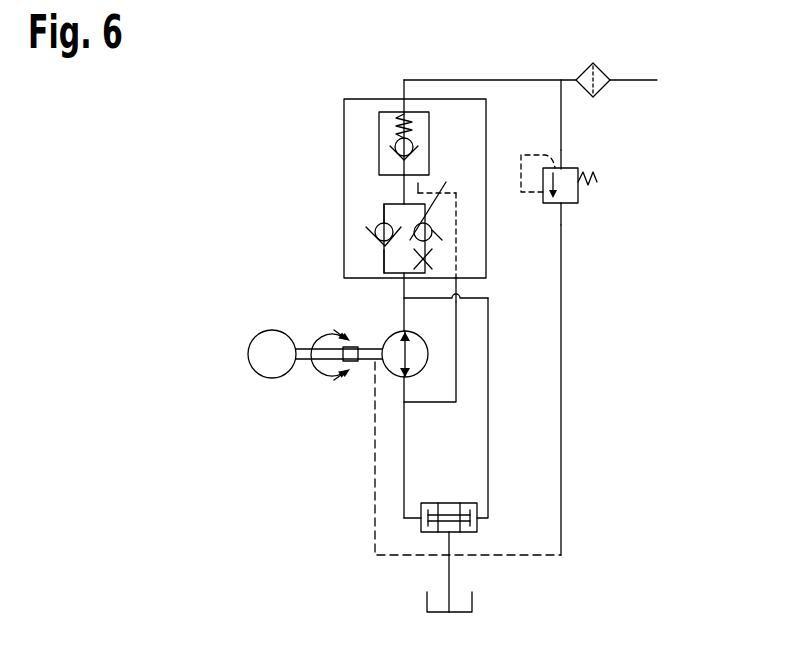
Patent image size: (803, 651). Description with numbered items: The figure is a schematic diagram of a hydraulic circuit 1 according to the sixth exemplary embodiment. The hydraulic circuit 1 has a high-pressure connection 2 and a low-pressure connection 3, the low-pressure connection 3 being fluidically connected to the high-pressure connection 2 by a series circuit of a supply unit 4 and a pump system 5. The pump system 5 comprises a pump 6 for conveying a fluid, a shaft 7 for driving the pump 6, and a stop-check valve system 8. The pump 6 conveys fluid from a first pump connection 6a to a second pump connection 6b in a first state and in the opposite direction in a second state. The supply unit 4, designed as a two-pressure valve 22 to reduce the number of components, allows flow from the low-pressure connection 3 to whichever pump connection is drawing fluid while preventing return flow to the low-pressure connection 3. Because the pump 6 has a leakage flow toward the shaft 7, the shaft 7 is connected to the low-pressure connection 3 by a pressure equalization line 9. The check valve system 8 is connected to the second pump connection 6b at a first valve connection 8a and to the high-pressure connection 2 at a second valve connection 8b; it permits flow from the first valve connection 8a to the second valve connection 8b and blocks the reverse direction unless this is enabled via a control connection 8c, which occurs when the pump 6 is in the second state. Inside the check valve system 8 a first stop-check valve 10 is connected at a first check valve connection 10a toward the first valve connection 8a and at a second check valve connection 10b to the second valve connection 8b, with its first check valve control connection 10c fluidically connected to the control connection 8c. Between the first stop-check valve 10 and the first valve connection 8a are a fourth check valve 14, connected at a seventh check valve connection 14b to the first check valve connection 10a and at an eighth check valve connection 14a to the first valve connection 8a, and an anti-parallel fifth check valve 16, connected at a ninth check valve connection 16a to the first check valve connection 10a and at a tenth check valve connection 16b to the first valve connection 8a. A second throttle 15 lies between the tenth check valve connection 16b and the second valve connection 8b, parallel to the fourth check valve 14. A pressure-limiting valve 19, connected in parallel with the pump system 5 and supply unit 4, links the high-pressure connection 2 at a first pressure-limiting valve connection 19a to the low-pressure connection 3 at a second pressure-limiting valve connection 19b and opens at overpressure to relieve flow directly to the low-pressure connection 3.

The hydraulic circuit 1 is at (178, 128).
The high-pressure connection 2 is at (632, 80).
The low-pressure connection 3 is at (450, 578).
The supply unit 4 is at (497, 524).
The pump system 5 is at (358, 413).
The pump 6 is at (390, 386).
The first pump connection 6a is at (405, 376).
The second pump connection 6b is at (405, 332).
The shaft 7 is at (305, 360).
The stop-check valve system 8 is at (344, 113).
The first valve connection 8a is at (404, 283).
The second valve connection 8b is at (402, 99).
The control connection 8c is at (457, 281).
The pressure equalization line 9 is at (372, 538).
The first stop-check valve 10 is at (380, 146).
The first check valve connection 10a is at (396, 180).
The second check valve connection 10b is at (407, 105).
The first check valve control connection 10c is at (420, 183).
The fourth check valve 14 is at (375, 234).
The eighth check valve connection 14a is at (384, 246).
The seventh check valve connection 14b is at (380, 226).
The second throttle 15 is at (434, 262).
The fifth check valve 16 is at (432, 232).
The ninth check valve connection 16a is at (448, 193).
The tenth check valve connection 16b is at (434, 241).
The pressure-limiting valve 19 is at (578, 197).
The first pressure-limiting valve connection 19a is at (566, 164).
The second pressure-limiting valve connection 19b is at (578, 203).
The two-pressure valve 22 is at (447, 502).